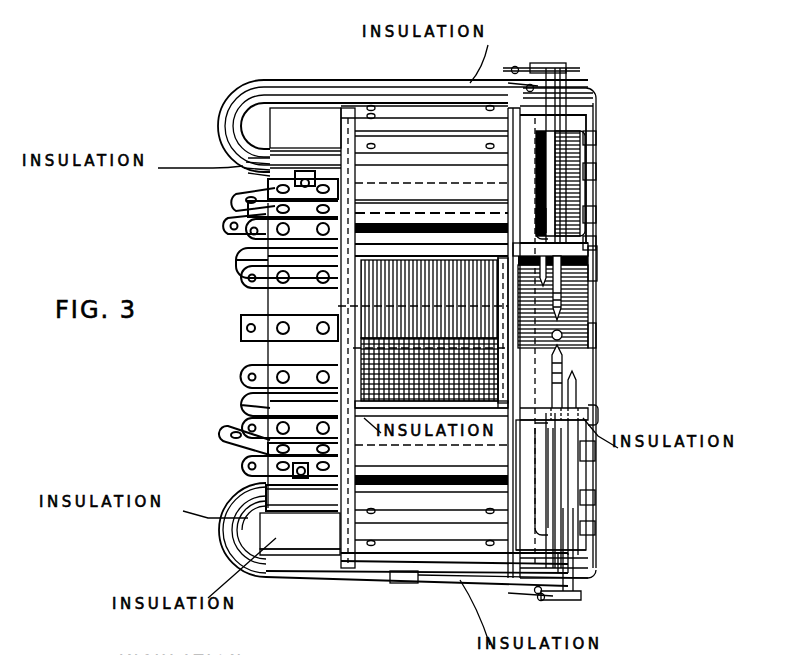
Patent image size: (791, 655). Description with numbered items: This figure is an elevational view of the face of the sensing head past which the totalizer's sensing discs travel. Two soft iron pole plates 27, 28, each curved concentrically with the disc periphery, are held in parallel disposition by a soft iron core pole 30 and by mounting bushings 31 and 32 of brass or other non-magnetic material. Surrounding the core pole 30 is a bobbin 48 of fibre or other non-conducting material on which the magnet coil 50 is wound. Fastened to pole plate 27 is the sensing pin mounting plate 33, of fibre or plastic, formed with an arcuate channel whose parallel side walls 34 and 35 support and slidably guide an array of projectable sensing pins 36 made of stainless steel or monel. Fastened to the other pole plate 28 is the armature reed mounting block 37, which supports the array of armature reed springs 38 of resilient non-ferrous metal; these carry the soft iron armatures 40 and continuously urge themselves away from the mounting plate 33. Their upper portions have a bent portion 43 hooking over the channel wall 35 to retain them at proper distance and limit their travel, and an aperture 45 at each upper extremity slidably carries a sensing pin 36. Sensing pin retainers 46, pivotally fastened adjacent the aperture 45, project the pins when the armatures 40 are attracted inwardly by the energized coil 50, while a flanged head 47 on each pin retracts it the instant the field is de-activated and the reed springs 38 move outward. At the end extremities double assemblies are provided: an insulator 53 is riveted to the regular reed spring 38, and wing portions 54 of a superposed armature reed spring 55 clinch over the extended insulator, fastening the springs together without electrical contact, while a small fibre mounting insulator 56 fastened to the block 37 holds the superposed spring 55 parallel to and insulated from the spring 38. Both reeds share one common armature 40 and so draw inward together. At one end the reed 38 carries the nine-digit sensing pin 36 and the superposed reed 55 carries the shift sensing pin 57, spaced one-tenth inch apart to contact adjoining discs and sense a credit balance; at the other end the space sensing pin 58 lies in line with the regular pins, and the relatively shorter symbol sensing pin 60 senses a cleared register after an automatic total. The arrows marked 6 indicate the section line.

The section line 6- 6 is at (170, 318).
The pole plate 27 is at (505, 328).
The pole plate 28 is at (236, 392).
The core pole 30 is at (358, 326).
The mounting bushing 31 is at (360, 158).
The mounting bushing 32 is at (340, 498).
The sensing pin mounting plate 33 is at (565, 361).
The side wall 34 is at (575, 405).
The side wall 35 is at (575, 533).
The projectable sensing pin 36 is at (560, 293).
The armature reed mounting block 37 is at (295, 518).
The armature reed spring 38 is at (343, 560).
The armature 40 is at (366, 88).
The bent portion 43 is at (236, 120).
The aperture 45 is at (565, 583).
The sensing pin retainer 46 is at (545, 78).
The flanged head 47 is at (560, 78).
The bobbin 48 is at (345, 298).
The magnet coil 50 is at (352, 403).
The insulator 53 is at (455, 547).
The wing portion 54 is at (400, 585).
The superposed armature reed spring 55 is at (340, 62).
The armature reed mounting insulator 56 is at (236, 482).
The shift sensing pin 57 is at (560, 458).
The space sensing pin 58 is at (575, 252).
The symbol sensing pin 60 is at (540, 224).